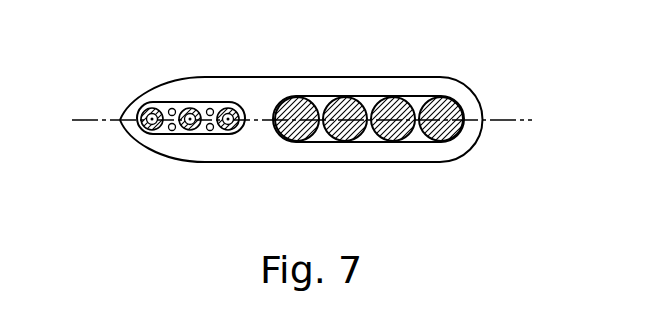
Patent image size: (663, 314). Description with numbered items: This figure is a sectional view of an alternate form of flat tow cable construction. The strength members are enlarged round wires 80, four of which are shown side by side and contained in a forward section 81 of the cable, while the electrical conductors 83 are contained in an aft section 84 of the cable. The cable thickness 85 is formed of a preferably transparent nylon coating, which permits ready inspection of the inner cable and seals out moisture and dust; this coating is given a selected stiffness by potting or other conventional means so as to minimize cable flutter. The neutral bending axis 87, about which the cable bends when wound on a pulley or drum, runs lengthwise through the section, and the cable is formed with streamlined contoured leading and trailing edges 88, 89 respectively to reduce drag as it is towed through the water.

The enlarged round wires 80 is at (446, 100).
The forward section 81 is at (373, 141).
The electrical conductors 83 is at (155, 118).
The aft section 84 is at (180, 134).
The cable thickness 85 is at (320, 87).
The neutral bending axis 87 is at (507, 118).
The leading edge 88 is at (477, 140).
The trailing edge 89 is at (127, 135).